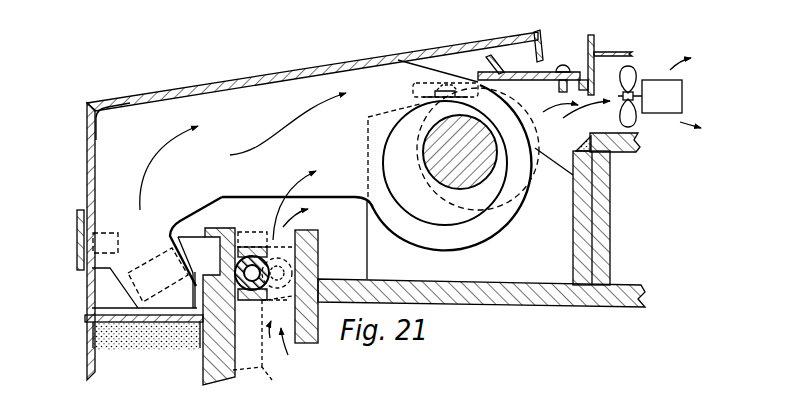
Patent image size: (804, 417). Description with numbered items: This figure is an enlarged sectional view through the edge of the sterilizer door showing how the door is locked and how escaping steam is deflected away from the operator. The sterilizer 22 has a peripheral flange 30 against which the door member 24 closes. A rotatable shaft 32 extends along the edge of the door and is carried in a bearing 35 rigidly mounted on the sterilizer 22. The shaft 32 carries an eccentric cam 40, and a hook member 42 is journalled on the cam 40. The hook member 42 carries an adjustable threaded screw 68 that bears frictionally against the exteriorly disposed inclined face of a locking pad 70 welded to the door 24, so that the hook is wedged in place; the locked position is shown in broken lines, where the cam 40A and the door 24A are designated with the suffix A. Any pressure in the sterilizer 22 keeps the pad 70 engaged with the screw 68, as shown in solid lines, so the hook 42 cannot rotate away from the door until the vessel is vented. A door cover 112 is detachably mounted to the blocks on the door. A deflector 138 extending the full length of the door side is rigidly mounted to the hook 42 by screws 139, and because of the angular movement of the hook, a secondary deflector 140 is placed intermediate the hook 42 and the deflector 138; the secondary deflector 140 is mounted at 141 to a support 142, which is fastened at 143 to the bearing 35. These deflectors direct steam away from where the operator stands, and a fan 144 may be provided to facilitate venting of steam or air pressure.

The sterilizer 22 is at (477, 303).
The door member 24 is at (203, 372).
The door member in locked position 24A is at (262, 331).
The peripheral flange 30 is at (305, 344).
The rotatable shaft 32 is at (440, 158).
The bearing 35 is at (547, 230).
The eccentric cam 40 is at (418, 192).
The eccentric cam in locked position 40A is at (569, 139).
The hook member 42 is at (243, 166).
The adjustable threaded screw 68 is at (157, 270).
The locking pad 70 is at (195, 228).
The door cover 112 is at (85, 344).
The deflector 138 is at (255, 75).
The screw 139 is at (77, 214).
The secondary deflector 140 is at (547, 70).
The mounting of secondary deflector 141 is at (565, 66).
The support 142 is at (478, 76).
The fastening of support 143 is at (414, 84).
The fan 144 is at (682, 96).